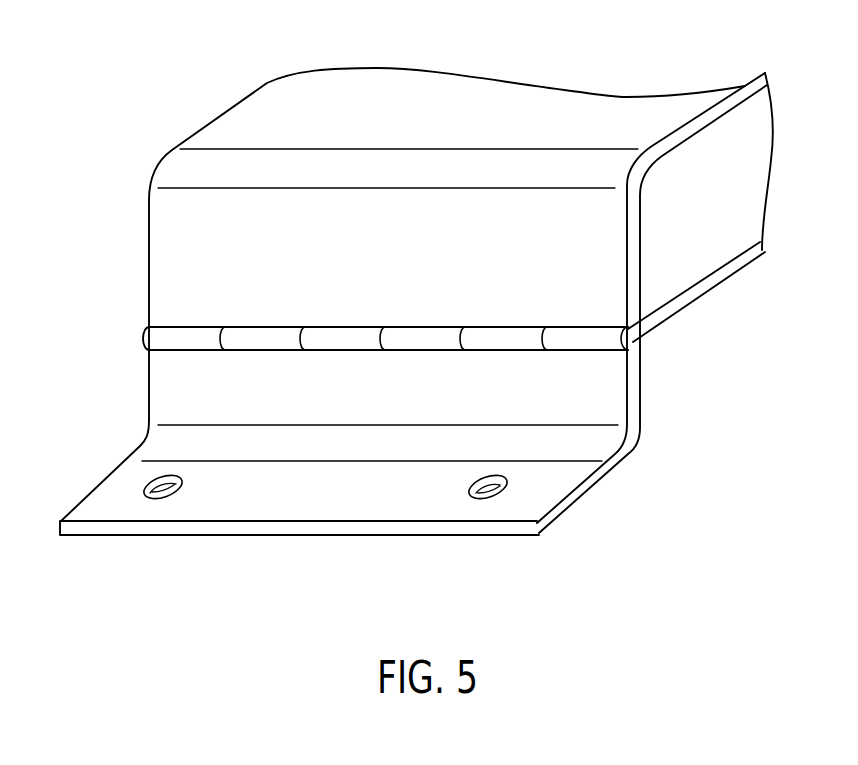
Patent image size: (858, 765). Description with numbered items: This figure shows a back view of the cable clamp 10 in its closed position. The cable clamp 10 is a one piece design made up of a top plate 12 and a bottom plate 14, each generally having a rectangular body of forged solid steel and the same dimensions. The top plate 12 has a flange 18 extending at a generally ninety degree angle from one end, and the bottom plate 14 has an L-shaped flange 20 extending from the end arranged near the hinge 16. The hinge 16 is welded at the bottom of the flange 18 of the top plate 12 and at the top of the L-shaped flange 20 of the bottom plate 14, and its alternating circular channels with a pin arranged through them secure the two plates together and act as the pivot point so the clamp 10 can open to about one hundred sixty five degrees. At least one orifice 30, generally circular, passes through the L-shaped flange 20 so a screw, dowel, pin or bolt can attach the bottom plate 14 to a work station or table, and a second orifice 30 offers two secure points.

The cable clamp 10 is at (104, 115).
The top plate 12 is at (228, 126).
The bottom plate 14 is at (760, 250).
The hinge 16 is at (627, 345).
The flange 18 is at (633, 222).
The L-shaped flange 20 is at (608, 472).
The orifice 30 is at (152, 487).